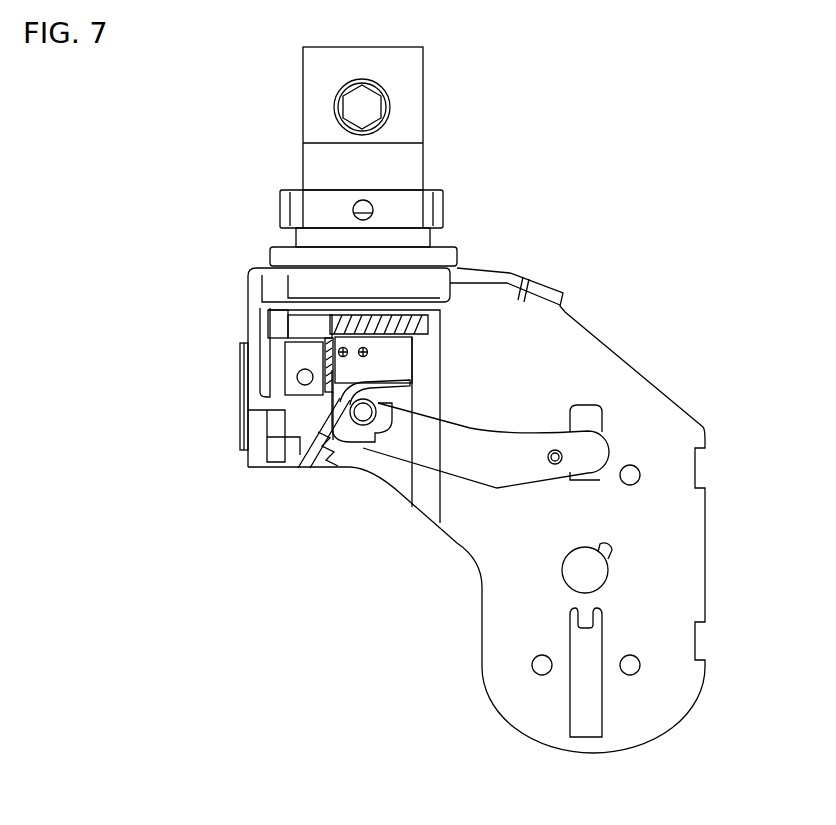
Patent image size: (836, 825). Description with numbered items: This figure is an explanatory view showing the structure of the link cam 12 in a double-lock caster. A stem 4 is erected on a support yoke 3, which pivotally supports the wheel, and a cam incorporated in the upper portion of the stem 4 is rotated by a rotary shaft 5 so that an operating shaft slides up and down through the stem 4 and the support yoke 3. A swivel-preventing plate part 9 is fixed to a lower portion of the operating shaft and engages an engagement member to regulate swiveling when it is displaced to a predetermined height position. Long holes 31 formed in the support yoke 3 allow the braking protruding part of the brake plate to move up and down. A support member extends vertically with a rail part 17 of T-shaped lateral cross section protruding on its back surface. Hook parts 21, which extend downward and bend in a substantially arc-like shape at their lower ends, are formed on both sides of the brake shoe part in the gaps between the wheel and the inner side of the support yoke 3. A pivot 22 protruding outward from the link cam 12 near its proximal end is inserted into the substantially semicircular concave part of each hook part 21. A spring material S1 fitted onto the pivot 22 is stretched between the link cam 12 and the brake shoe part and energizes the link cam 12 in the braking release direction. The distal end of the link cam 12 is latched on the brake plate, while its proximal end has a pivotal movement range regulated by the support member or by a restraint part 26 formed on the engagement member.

The support yoke 3 is at (583, 345).
The stem 4 is at (459, 120).
The rotary shaft 5 is at (368, 107).
The swivel-preventing plate part 9 is at (412, 330).
The link cam 12 is at (462, 443).
The rail part 17 is at (240, 380).
The hook part 21 is at (398, 357).
The pivot 22 is at (363, 415).
The restraint part 26 is at (283, 437).
The spring material S1 is at (333, 420).
The long hole 31 is at (590, 705).